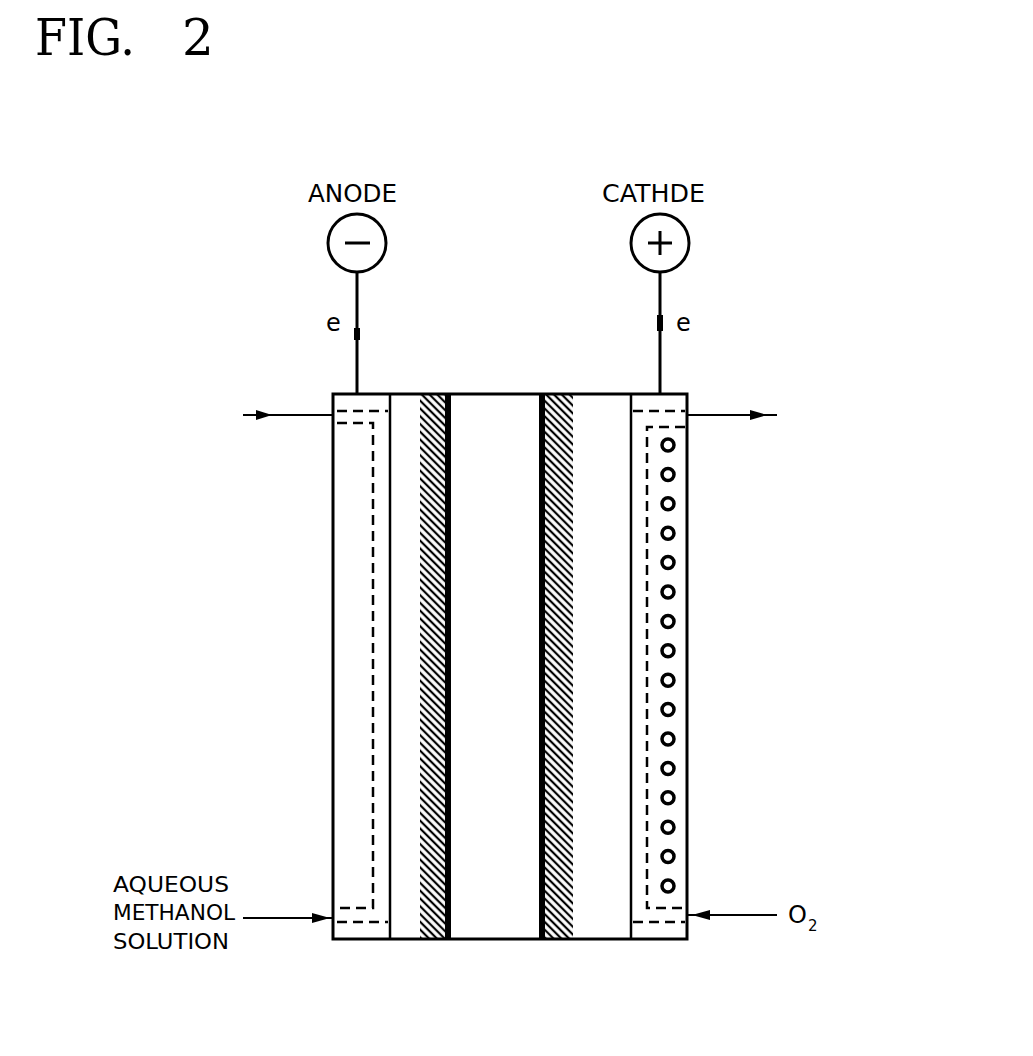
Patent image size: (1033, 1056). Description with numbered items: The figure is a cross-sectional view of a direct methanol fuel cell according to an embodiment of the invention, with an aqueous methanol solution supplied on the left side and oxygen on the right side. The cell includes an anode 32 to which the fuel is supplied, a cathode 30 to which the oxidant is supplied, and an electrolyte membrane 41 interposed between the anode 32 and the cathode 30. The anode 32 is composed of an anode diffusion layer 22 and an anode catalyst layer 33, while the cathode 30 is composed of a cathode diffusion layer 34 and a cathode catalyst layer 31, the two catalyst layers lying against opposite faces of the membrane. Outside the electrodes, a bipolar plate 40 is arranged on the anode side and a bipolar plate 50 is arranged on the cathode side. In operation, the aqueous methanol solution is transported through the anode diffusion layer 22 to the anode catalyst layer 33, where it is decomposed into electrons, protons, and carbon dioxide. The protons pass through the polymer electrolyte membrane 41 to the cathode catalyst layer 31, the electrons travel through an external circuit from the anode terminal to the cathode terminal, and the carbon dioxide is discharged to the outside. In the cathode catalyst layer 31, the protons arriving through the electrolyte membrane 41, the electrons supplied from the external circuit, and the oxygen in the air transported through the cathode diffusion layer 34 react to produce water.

The anode diffusion layer 22 is at (403, 550).
The cathode 30 is at (569, 674).
The cathode catalyst layer 31 is at (557, 940).
The anode 32 is at (422, 674).
The anode catalyst layer 33 is at (433, 940).
The cathode diffusion layer 34 is at (610, 549).
The bipolar plate on the anode 40 is at (357, 638).
The electrolyte membrane 41 is at (495, 940).
The bipolar plate on the cathode 50 is at (663, 638).